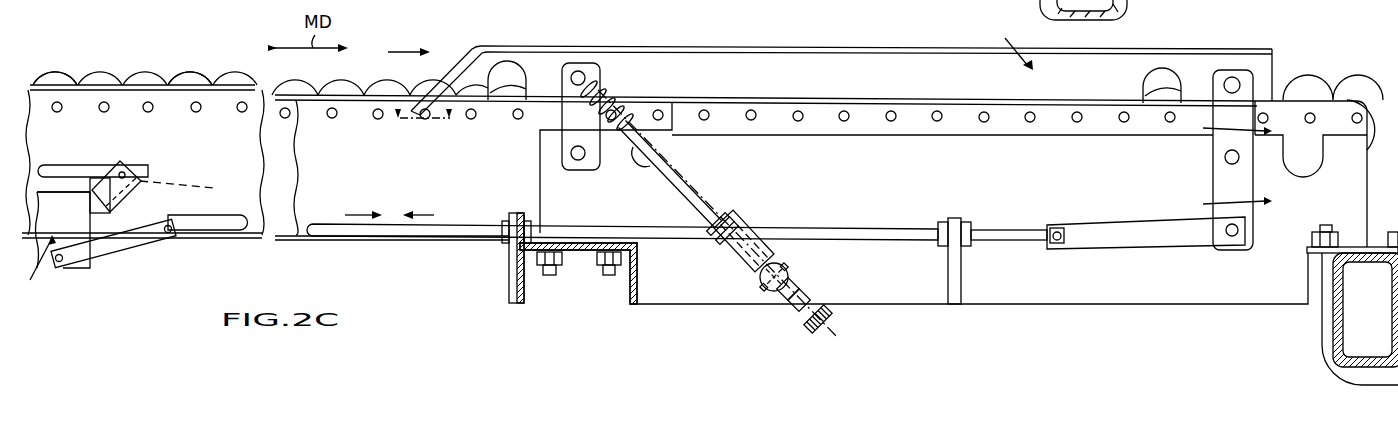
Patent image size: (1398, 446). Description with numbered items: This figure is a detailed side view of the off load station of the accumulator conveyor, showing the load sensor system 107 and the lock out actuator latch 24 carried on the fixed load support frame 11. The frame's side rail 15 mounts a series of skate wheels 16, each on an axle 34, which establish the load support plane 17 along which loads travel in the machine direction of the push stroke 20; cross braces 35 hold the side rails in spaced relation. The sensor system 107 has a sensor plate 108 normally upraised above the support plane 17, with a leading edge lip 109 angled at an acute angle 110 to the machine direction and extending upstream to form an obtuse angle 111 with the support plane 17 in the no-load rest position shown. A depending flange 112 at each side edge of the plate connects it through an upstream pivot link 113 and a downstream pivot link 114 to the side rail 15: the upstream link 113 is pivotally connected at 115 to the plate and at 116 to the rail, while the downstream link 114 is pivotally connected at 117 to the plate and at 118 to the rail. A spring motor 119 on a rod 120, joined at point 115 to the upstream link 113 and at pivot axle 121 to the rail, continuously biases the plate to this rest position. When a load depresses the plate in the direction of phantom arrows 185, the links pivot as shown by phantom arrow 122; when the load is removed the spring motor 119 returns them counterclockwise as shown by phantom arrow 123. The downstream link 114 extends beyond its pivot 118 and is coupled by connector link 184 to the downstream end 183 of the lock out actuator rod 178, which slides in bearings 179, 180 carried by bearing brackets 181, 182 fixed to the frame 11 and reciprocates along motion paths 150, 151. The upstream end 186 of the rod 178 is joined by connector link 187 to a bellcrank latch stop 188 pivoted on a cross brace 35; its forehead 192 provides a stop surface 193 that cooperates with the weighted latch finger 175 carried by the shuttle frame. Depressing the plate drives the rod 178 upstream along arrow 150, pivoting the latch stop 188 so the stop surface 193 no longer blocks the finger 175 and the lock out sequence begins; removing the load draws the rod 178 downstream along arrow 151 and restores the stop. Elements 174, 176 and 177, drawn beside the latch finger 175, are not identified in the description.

The load support frame 11 is at (216, 110).
The side rail 15 is at (330, 170).
The skate wheels 16 is at (188, 80).
The load support plane 17 is at (138, 72).
The push stroke 20 is at (419, 53).
The lock out actuator latch 24 is at (119, 285).
The axle 34 is at (197, 114).
The cross braces 35 is at (526, 292).
The load sensor system 107 is at (735, 328).
The sensor plate 108 is at (832, 47).
The leading edge lip 109 is at (452, 70).
The acute angle 110 is at (449, 120).
The obtuse angle 111 is at (395, 117).
The depending flange 112 is at (882, 95).
The upstream pivot link 113 is at (540, 118).
The downstream pivot link 114 is at (1213, 173).
The pivot connection 115 is at (590, 70).
The pivot connection 116 is at (578, 161).
The pivot connection 117 is at (1233, 78).
The pivot connection 118 is at (1240, 160).
The spring motor 119 is at (700, 185).
The rod 120 is at (672, 178).
The pivot axle 121 is at (792, 265).
The phantom arrow 122 is at (1230, 124).
The phantom arrow 123 is at (1233, 198).
The motion path 150 is at (428, 214).
The motion path 151 is at (366, 214).
The guide bar 174 is at (150, 170).
The weighted latch finger 175 is at (131, 192).
The cam block 176 is at (130, 162).
The cam path 177 is at (193, 186).
The lock out actuator rod 178 is at (805, 226).
The bearing 179 is at (500, 241).
The bearing 180 is at (967, 222).
The bearing bracket 181 is at (508, 288).
The bearing bracket 182 is at (963, 288).
The downstream end 183 is at (1012, 244).
The connector link 184 is at (1150, 247).
The phantom arrows 185 is at (1028, 68).
The upstream end 186 is at (215, 225).
The connector link 187 is at (133, 237).
The bellcrank latch stop 188 is at (30, 280).
The forehead 192 is at (88, 208).
The stop surface 193 is at (93, 190).